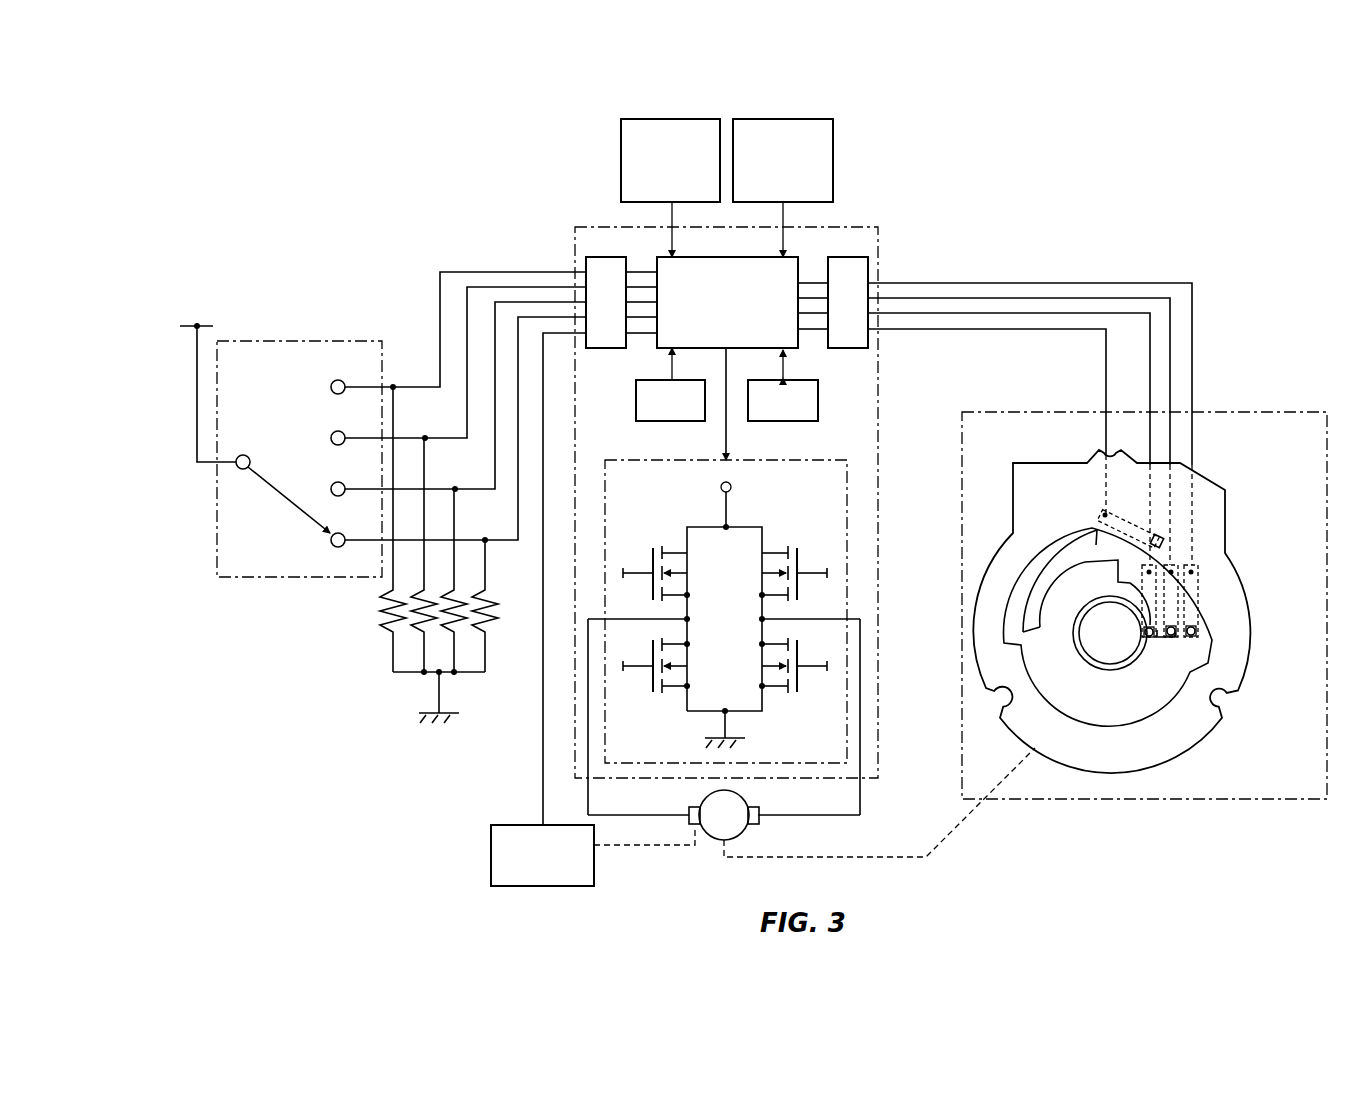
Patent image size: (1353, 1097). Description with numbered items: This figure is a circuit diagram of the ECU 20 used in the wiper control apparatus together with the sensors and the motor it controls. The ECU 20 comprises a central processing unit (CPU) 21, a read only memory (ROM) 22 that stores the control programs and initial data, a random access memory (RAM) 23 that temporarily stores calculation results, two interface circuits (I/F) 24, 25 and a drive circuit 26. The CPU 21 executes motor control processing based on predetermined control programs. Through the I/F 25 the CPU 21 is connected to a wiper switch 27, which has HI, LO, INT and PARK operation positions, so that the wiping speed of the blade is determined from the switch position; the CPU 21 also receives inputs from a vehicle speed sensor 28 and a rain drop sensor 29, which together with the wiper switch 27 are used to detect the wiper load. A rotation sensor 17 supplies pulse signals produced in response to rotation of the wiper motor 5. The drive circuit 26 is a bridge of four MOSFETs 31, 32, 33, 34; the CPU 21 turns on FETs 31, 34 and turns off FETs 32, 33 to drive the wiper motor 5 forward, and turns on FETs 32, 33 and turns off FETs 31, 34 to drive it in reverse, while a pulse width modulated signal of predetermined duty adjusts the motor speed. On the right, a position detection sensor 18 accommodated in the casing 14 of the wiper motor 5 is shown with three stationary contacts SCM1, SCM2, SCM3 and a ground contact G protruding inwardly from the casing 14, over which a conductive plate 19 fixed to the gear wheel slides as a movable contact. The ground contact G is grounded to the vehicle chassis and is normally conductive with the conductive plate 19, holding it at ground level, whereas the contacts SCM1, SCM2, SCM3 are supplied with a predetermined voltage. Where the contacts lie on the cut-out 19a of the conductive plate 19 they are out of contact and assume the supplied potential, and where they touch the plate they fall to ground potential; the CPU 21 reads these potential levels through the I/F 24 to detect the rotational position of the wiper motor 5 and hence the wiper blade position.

The wiper motor 5 is at (743, 836).
The casing 14 is at (1225, 490).
The rotation sensor 17 is at (491, 833).
The position detection sensor 18 is at (1130, 588).
The conductive plate 19 is at (1157, 700).
The cut-out 19a is at (1068, 572).
The ECU 20 is at (878, 247).
The central processing unit (CPU) 21 is at (798, 262).
The read only memory (ROM) 22 is at (655, 403).
The random access memory (RAM) 23 is at (801, 404).
The interface circuit (I/F) 24 is at (856, 322).
The interface circuit (I/F) 25 is at (601, 322).
The drive circuit 26 is at (724, 594).
The wiper switch 27 is at (281, 441).
The vehicle speed sensor 28 is at (620, 132).
The rain drop sensor 29 is at (833, 134).
The MOSFET 31 is at (652, 556).
The MOSFET 32 is at (652, 684).
The MOSFET 33 is at (806, 554).
The MOSFET 34 is at (798, 684).
The stationary contact SCM1 is at (1162, 538).
The stationary contact SCM2 is at (1195, 623).
The stationary contact SCM3 is at (1167, 634).
The ground contact G is at (1167, 650).